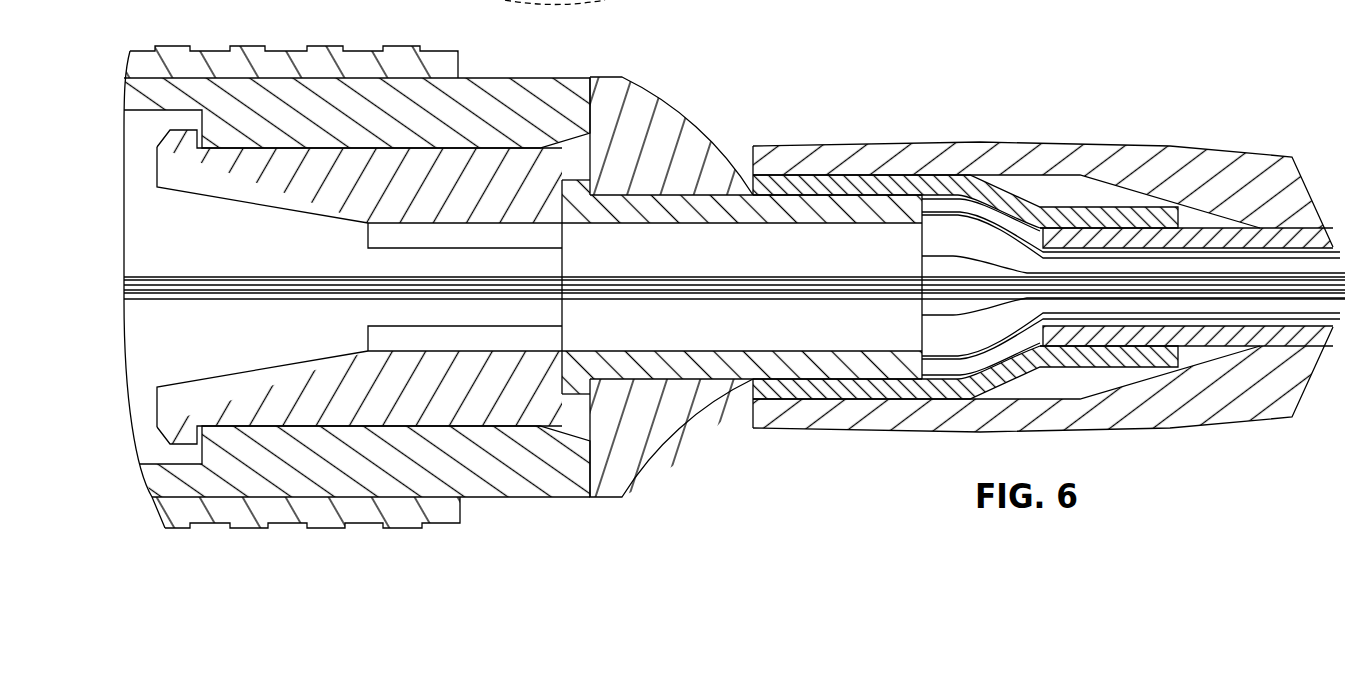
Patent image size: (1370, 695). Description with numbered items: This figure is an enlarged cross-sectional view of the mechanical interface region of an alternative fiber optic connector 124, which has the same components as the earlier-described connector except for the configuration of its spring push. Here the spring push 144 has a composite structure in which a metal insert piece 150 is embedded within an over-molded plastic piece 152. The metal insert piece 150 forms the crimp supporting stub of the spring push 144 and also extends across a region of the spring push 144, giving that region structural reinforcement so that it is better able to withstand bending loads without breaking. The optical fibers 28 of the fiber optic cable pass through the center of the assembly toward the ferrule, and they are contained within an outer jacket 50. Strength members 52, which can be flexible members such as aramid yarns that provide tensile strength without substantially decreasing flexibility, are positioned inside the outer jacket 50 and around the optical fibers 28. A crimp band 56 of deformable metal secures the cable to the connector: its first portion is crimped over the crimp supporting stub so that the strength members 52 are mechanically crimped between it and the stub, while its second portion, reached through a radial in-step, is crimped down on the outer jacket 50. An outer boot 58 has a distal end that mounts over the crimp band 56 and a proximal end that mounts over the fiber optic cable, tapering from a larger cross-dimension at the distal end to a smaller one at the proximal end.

The fiber optic connector 124 is at (623, 57).
The spring push 144 is at (660, 90).
The over-molded plastic piece 152 is at (683, 115).
The metal insert piece 150 is at (672, 195).
The optical fibers 28 is at (740, 280).
The strength members 52 is at (880, 193).
The crimp band 56 is at (1023, 197).
The outer boot 58 is at (1140, 148).
The outer jacket 50 is at (1208, 228).